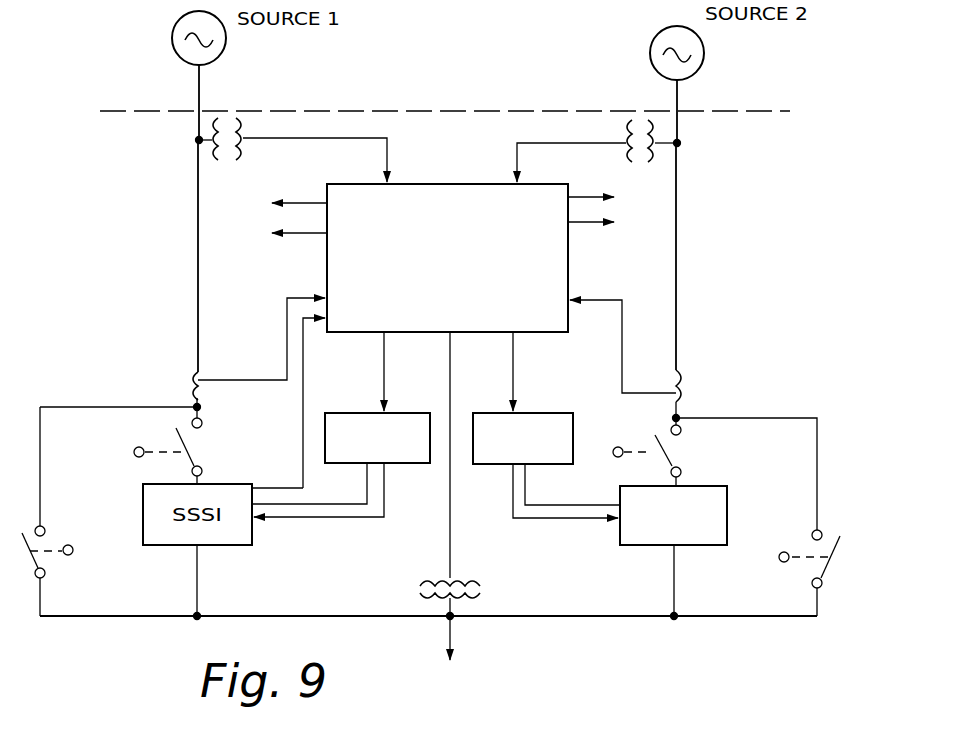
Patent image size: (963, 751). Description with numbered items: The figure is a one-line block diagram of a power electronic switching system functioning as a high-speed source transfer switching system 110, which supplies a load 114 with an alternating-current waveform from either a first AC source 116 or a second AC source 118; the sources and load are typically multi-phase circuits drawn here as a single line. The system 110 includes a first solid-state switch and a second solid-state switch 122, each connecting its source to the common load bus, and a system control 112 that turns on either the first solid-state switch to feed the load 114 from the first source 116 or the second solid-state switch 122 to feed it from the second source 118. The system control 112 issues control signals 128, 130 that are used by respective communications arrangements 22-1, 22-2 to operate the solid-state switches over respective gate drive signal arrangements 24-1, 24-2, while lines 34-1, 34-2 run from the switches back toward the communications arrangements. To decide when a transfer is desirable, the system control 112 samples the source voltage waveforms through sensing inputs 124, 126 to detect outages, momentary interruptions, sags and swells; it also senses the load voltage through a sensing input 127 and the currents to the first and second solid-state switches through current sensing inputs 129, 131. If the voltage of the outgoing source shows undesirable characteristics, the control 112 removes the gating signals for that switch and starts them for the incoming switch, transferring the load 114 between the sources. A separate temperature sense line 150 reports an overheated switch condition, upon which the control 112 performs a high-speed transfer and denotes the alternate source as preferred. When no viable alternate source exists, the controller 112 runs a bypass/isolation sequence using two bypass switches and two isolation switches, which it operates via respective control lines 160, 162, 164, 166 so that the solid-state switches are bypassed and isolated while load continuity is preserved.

The high-speed source transfer switching system 110 is at (767, 262).
The system control 112 is at (570, 268).
The load 114 is at (445, 636).
The first AC source 116 is at (205, 93).
The second AC source 118 is at (681, 98).
The second solid-state switch SSS2 122 is at (717, 485).
The sensing input 124 is at (370, 138).
The sensing input 126 is at (540, 143).
The sensing input 127 is at (451, 522).
The control signals 128 is at (384, 360).
The current sensing input 129 is at (287, 355).
The control signals 130 is at (518, 385).
The current sensing input 131 is at (598, 300).
The temperature sense line 150 is at (303, 424).
The control line 160 is at (93, 582).
The control line 162 is at (745, 582).
The control line 164 is at (92, 432).
The control line 166 is at (615, 447).
The communications arrangement 22-1 is at (411, 465).
The communications arrangement 22-2 is at (487, 411).
The gate drive signal arrangement 24-1 is at (299, 522).
The gate drive signal arrangement 24-2 is at (565, 522).
The first status line 34-1 is at (325, 491).
The second status line 34-2 is at (537, 503).